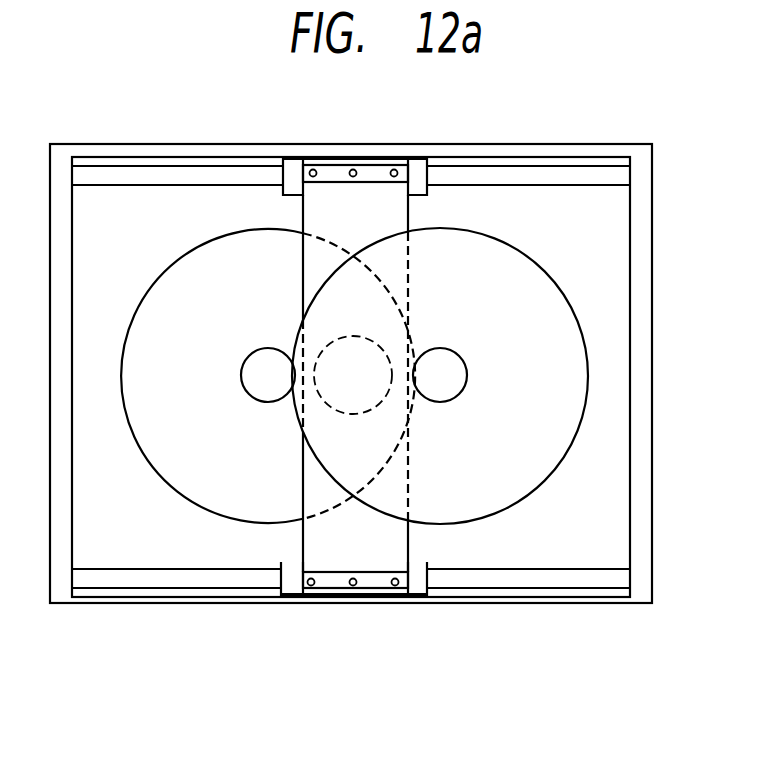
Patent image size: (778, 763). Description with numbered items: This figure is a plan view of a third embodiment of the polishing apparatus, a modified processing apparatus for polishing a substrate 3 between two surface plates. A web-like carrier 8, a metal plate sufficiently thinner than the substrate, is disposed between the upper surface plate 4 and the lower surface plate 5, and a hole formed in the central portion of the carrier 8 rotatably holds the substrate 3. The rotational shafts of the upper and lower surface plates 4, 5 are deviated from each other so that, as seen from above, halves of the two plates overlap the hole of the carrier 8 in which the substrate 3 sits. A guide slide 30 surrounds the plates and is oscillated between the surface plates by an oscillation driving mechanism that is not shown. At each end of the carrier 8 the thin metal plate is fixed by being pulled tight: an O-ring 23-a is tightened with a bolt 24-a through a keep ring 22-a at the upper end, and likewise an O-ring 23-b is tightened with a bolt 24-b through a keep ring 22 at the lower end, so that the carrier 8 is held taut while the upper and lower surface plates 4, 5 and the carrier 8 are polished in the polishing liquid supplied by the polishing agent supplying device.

The guide slide 30 is at (540, 175).
The carrier 8 is at (340, 532).
The lower surface plate 5 is at (172, 277).
The upper surface plate 4 is at (528, 272).
The substrate 3 is at (363, 357).
The O-ring 23-a is at (415, 175).
The keep ring 22-a is at (323, 170).
The bolt 24-a is at (390, 170).
The O-ring 23-b is at (408, 568).
The keep ring 22 is at (325, 583).
The bolt 24-b is at (395, 587).